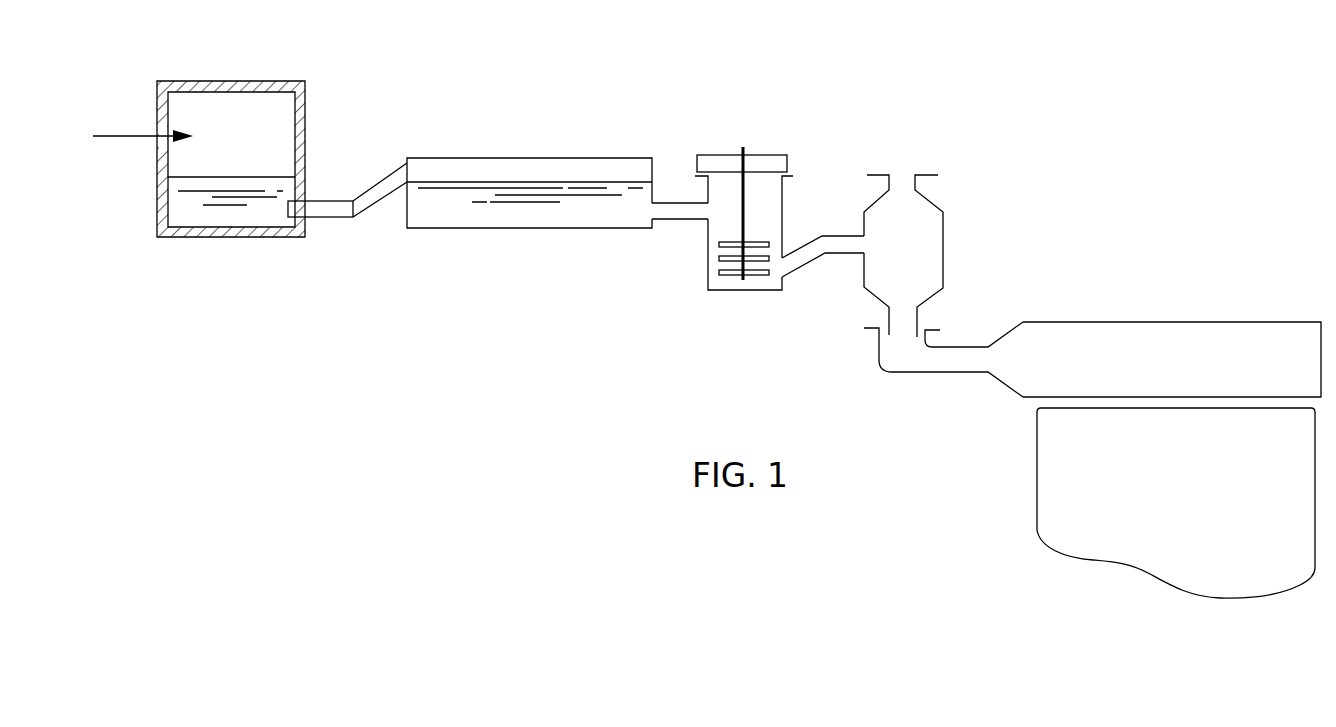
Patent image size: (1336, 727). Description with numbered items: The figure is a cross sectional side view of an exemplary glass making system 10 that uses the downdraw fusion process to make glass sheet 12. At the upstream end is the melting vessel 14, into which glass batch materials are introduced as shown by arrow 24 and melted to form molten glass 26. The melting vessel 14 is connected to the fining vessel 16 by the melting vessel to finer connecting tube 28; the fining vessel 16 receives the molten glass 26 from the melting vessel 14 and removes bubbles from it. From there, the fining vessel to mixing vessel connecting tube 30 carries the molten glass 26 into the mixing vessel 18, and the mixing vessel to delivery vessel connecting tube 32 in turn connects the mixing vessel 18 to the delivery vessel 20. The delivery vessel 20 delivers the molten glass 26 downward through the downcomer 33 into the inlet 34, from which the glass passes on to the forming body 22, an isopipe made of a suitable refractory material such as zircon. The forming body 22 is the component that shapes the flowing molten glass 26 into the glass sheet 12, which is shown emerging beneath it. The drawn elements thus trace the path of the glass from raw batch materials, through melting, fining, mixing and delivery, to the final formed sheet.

The glass making system 10 is at (558, 74).
The glass sheet 12 is at (1037, 488).
The melting vessel 14 is at (237, 82).
The fining vessel 16 is at (480, 158).
The mixing vessel 18 is at (706, 260).
The delivery vessel 20 is at (942, 236).
The forming body 22 is at (1210, 322).
The arrow 24 is at (130, 132).
The molten glass 26 is at (197, 177).
The melting vessel to finer connecting tube 28 is at (339, 218).
The fining vessel to mixing vessel connecting tube 30 is at (686, 202).
The mixing vessel to delivery vessel connecting tube 32 is at (808, 265).
The downcomer 33 is at (917, 317).
The inlet 34 is at (883, 369).